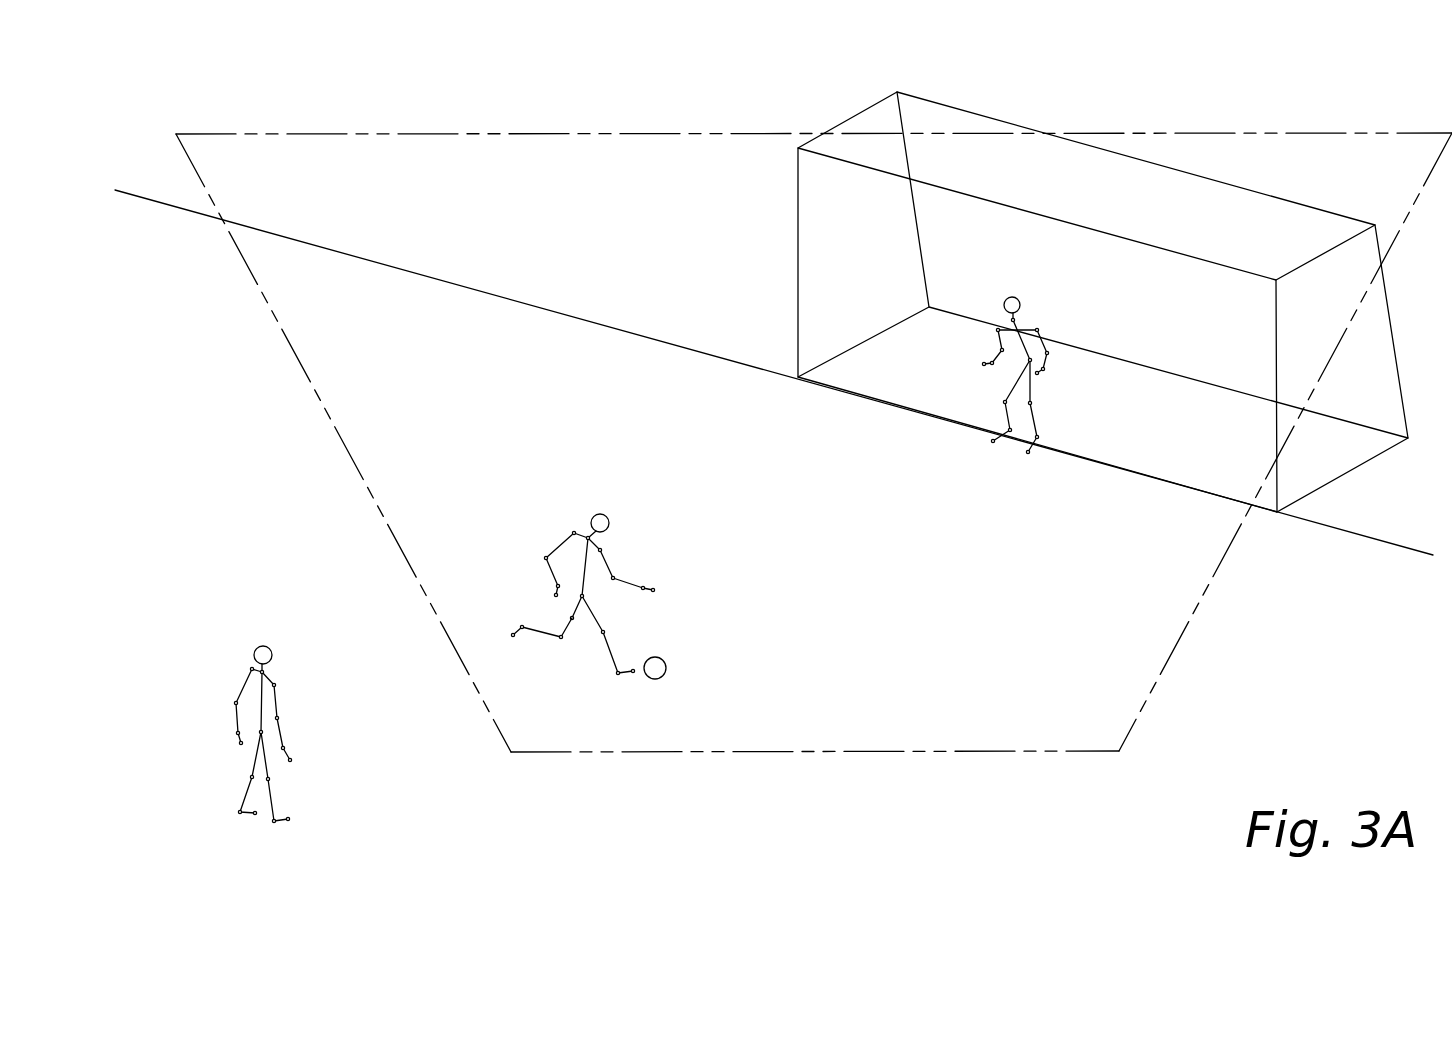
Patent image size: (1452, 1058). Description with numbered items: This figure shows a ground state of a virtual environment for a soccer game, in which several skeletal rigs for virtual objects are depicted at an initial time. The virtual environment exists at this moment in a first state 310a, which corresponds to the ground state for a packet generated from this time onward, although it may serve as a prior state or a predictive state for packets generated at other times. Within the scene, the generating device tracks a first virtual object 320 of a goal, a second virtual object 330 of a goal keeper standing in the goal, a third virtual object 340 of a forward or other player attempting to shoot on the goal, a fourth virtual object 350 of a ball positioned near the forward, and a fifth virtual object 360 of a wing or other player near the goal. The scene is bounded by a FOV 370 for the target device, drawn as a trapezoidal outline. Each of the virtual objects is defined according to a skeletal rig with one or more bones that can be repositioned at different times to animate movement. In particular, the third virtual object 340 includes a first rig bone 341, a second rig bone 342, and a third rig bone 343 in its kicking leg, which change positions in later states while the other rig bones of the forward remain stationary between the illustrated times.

The first state 310a is at (255, 449).
The first virtual object 320 is at (798, 250).
The second virtual object 330 is at (1020, 299).
The third virtual object 340 is at (584, 587).
The first rig bone 341 is at (574, 621).
The second rig bone 342 is at (538, 625).
The third rig bone 343 is at (520, 638).
The fourth virtual object 350 is at (667, 665).
The fifth virtual object 360 is at (254, 647).
The FOV 370 is at (1181, 639).